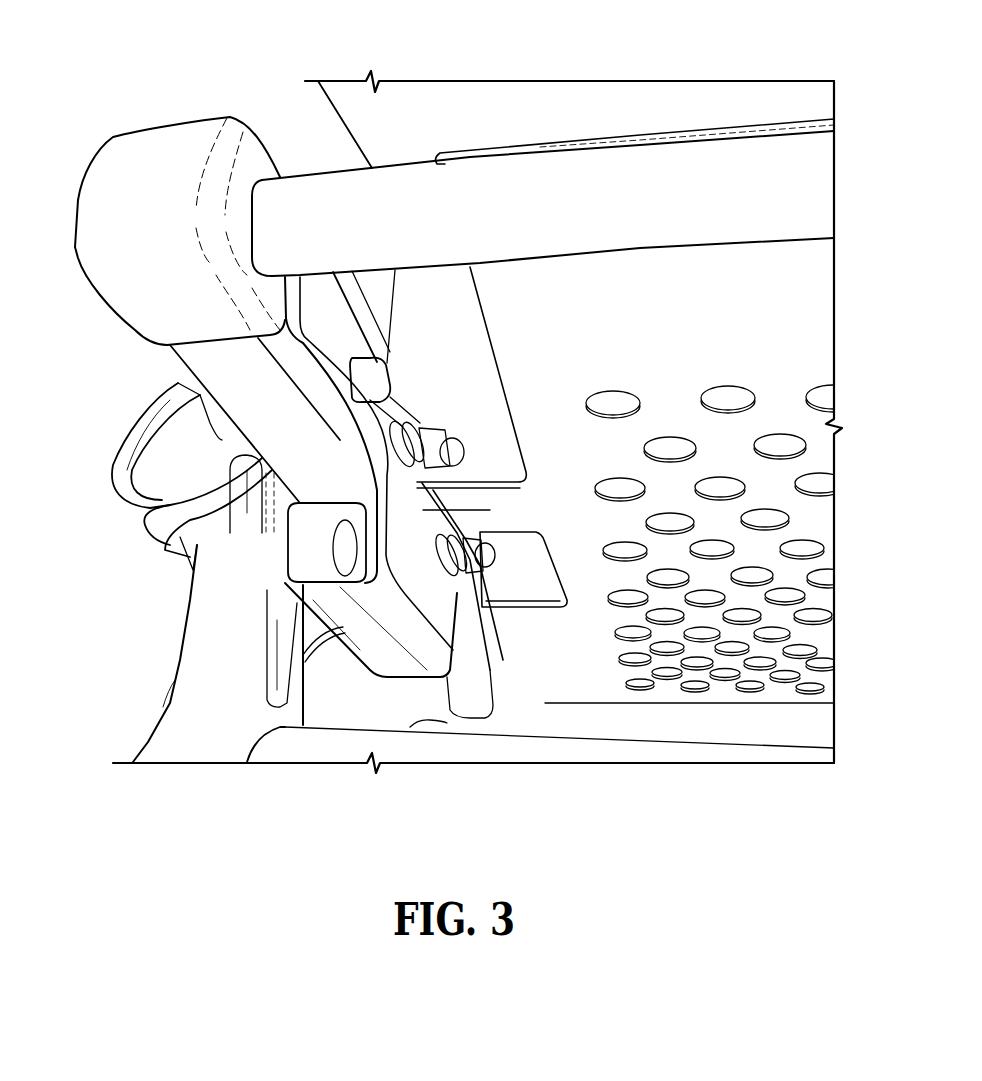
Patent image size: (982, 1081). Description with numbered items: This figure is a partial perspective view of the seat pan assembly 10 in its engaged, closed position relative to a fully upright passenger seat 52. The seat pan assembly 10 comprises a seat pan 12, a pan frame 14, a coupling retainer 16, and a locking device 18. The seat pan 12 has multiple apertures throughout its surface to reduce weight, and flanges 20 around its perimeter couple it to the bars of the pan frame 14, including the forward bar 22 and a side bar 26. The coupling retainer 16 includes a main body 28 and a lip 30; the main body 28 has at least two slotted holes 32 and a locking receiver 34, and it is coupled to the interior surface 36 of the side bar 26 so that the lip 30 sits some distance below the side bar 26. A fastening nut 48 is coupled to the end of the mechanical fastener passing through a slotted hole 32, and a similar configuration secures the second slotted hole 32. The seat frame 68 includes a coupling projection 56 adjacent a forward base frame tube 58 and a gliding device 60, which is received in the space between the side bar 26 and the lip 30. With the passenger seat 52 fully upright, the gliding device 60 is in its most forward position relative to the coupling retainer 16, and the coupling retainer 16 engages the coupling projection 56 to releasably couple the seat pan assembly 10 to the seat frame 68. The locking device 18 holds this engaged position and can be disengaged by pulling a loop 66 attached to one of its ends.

The seat pan assembly 10 is at (758, 575).
The seat pan 12 is at (750, 307).
The pan frame 14 is at (768, 193).
The coupling retainer 16 is at (433, 668).
The locking device 18 is at (377, 377).
The flanges 20 is at (480, 503).
The forward bar 22 is at (493, 198).
The side bar 26 is at (247, 387).
The main body 28 is at (543, 667).
The lip 30 is at (373, 640).
The slotted holes 32 is at (380, 423).
The locking receiver 34 is at (313, 317).
The interior surface 36 is at (357, 465).
The fastening nut 48 is at (452, 455).
The passenger seat 52 is at (407, 105).
The coupling projection 56 is at (202, 707).
The forward base frame tube 58 is at (288, 748).
The gliding device 60 is at (290, 550).
The loop 66 is at (120, 460).
The seat frame 68 is at (343, 750).